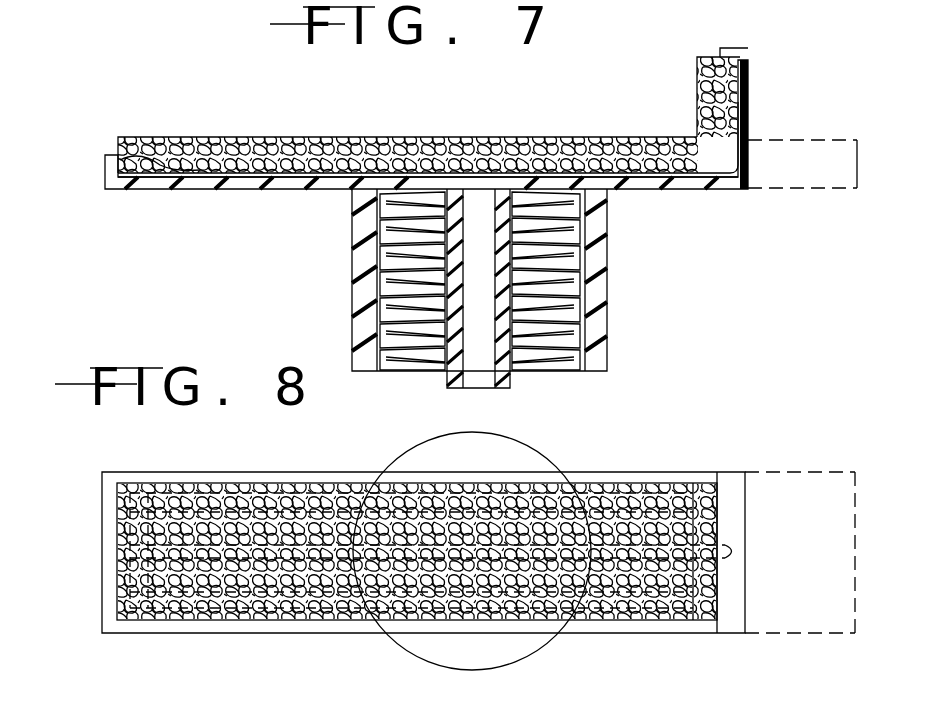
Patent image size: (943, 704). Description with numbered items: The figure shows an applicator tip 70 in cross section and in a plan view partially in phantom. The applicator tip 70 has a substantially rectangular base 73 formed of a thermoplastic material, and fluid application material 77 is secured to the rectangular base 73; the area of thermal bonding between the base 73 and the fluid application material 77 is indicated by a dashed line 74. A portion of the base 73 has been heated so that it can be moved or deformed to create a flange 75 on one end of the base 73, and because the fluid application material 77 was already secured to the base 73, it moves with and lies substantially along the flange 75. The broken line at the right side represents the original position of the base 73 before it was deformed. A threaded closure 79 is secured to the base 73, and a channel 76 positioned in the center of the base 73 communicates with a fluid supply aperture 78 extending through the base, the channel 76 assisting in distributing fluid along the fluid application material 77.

In FIG. 7, the applicator tip 70 is at (392, 130).
In FIG. 8, the applicator tip 70 is at (308, 470).
In FIG. 7, the rectangular base 73 is at (197, 189).
In FIG. 8, the rectangular base 73 is at (170, 633).
In FIG. 8, the dashed line 74 is at (113, 545).
In FIG. 7, the flange 75 is at (752, 73).
In FIG. 8, the channel 76 is at (285, 485).
In FIG. 7, the fluid application material 77 is at (179, 137).
In FIG. 7, the fluid supply aperture 78 is at (480, 378).
In FIG. 7, the threaded closure 79 is at (608, 256).
In FIG. 8, the threaded closure 79 is at (562, 460).